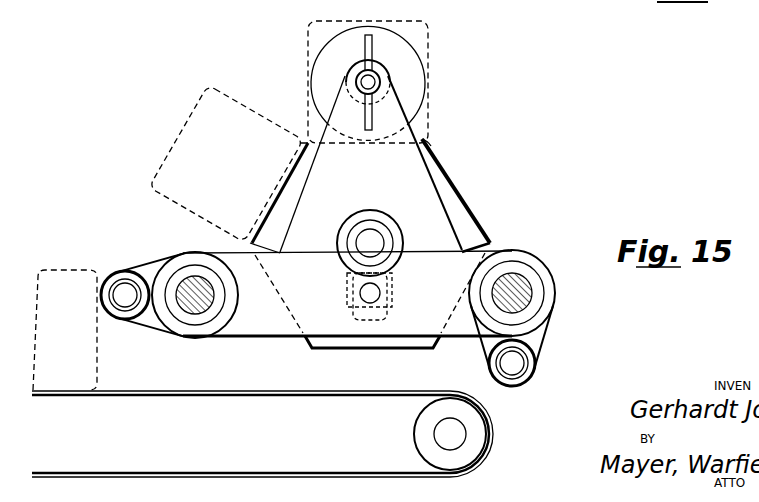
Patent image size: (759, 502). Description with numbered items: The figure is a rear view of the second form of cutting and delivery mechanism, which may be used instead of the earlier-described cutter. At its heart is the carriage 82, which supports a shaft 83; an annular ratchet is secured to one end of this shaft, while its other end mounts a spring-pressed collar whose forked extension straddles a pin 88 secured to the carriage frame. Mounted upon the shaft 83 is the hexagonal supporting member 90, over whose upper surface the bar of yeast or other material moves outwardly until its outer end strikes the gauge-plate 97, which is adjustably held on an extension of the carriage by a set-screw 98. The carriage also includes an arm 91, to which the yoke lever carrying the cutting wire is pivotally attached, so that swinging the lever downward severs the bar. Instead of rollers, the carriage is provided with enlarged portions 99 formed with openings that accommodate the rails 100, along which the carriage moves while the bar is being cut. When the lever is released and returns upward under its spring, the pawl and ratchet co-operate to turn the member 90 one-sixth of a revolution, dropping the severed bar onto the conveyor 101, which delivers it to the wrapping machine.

The carriage 82 is at (402, 135).
The shaft 83 is at (378, 247).
The pin 88 is at (365, 294).
The hexagonal supporting member 90 is at (460, 215).
The arm 91 is at (150, 270).
The gauge-plate 97 is at (387, 33).
The set-screw 98 is at (362, 81).
The enlarged portions 99 is at (184, 280).
The rails 100 is at (200, 308).
The conveyor 101 is at (346, 395).